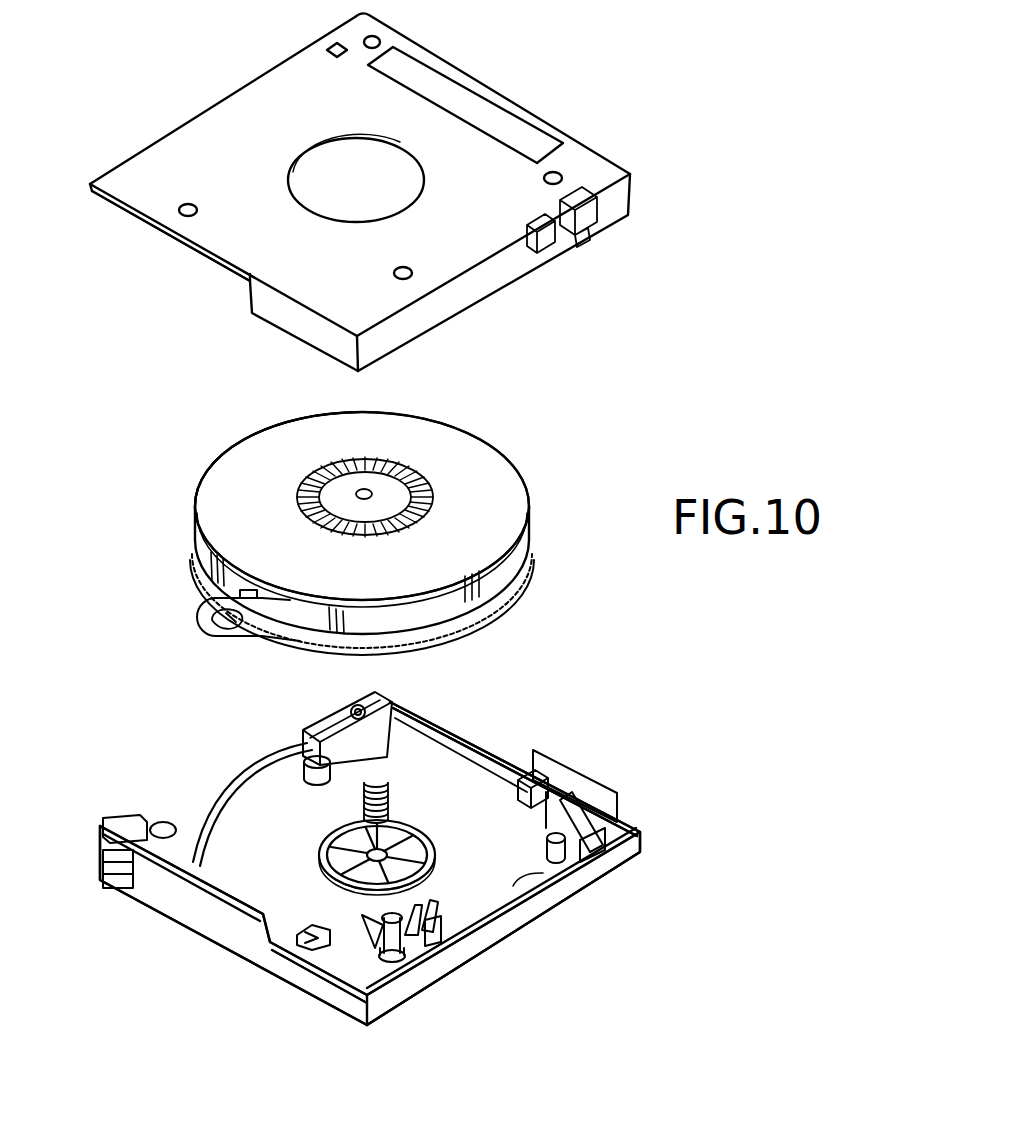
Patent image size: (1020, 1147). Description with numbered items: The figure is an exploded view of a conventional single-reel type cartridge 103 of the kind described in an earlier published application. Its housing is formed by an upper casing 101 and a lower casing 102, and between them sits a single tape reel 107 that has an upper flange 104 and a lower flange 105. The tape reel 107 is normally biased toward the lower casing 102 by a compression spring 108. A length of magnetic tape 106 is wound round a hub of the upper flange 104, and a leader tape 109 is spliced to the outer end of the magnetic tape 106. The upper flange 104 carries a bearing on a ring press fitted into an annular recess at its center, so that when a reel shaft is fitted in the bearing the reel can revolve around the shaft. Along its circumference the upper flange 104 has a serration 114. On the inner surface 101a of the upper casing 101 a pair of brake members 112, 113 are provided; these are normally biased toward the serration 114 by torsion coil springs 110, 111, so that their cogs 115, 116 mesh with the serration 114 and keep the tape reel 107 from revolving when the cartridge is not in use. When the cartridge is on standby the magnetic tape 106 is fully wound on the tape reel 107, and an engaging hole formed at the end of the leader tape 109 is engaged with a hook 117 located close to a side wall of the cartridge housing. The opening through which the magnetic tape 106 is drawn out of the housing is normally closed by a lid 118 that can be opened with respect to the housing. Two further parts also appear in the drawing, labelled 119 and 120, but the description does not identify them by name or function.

The upper casing 101 is at (522, 923).
The inner surface of the upper casing 101a is at (570, 887).
The lower casing 102 is at (158, 166).
The single-reel type cartridge 103 is at (84, 483).
The upper flange 104 is at (522, 568).
The lower flange 105 is at (465, 448).
The magnetic tape 106 is at (197, 573).
The tape reel 107 is at (217, 458).
The compression spring 108 is at (389, 803).
The leader tape 109 is at (240, 630).
The torsion coil spring 110 is at (417, 717).
The torsion coil spring 111 is at (392, 1005).
The brake member 112 is at (333, 728).
The brake member 113 is at (412, 908).
The serration 114 is at (480, 617).
The cog 115 is at (277, 757).
The cog 116 is at (460, 967).
The hook 117 is at (292, 952).
The lid 118 is at (162, 900).
The bracket plate 119 is at (572, 775).
The edge of upper casing 120 is at (173, 247).